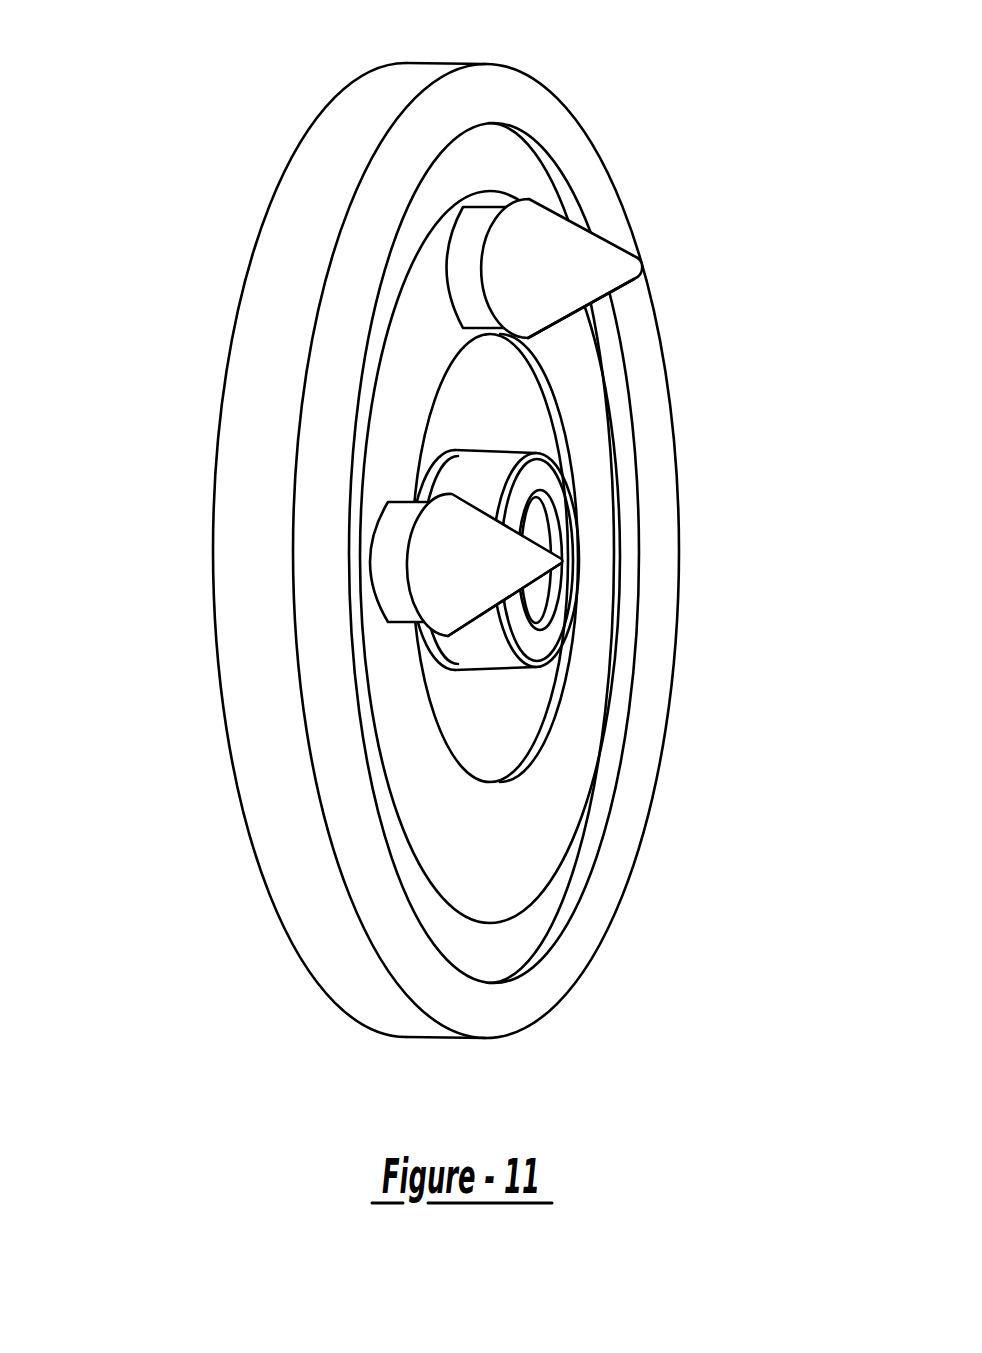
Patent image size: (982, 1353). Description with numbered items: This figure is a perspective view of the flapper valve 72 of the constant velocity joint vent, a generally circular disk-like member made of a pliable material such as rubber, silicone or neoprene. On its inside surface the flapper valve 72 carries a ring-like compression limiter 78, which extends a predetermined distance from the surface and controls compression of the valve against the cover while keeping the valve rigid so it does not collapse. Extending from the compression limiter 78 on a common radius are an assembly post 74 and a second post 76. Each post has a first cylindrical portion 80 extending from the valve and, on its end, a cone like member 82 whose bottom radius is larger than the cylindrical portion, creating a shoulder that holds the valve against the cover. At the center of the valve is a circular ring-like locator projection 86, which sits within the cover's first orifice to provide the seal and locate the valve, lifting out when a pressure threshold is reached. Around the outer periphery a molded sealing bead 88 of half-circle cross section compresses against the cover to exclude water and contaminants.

The flapper valve 72 is at (183, 257).
The assembly post 74 is at (556, 250).
The second post 76 is at (494, 574).
The compression limiter 78 is at (397, 383).
The first cylindrical portion 80 is at (464, 240).
The cone like member 82 is at (593, 277).
The locator projection 86 is at (540, 474).
The sealing bead 88 is at (488, 99).